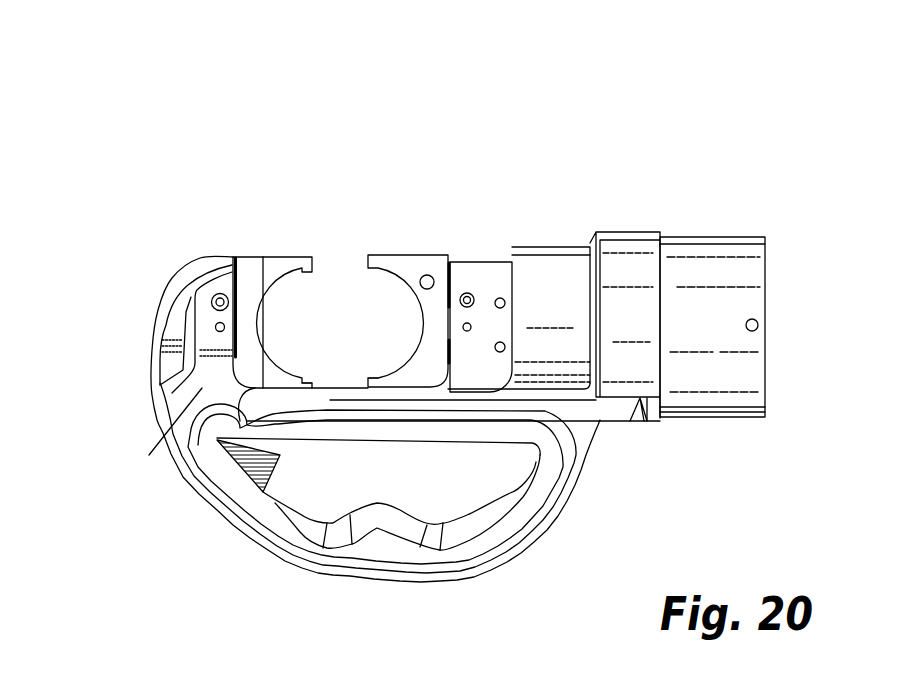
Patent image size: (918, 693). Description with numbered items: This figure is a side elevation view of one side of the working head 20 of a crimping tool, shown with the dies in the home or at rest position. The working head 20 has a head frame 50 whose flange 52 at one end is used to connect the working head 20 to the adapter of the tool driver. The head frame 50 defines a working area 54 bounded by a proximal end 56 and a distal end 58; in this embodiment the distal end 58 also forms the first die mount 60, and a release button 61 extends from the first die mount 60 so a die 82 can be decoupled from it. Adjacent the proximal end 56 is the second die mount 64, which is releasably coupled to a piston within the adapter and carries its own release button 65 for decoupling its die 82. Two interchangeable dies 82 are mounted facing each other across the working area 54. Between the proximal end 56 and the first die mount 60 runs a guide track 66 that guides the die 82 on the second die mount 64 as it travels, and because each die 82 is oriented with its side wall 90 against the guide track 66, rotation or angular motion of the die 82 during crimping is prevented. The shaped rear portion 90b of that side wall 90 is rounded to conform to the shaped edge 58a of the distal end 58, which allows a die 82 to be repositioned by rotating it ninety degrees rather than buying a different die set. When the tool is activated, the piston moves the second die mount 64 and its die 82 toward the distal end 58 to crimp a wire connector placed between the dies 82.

The working head 20 is at (531, 115).
The head frame 50 is at (519, 542).
The flange 52 is at (712, 237).
The working area 54 is at (340, 247).
The proximal end 56 is at (560, 250).
The distal end 58 is at (150, 362).
The shaped edge 58a is at (149, 455).
The first die mount 60 is at (199, 265).
The release button 61 is at (211, 300).
The second die mount 64 is at (487, 261).
The release button 65 is at (467, 292).
The guide track 66 is at (341, 388).
The die 82 is at (286, 252).
The side wall 90 is at (284, 399).
The shaped rear portion 90b is at (222, 442).